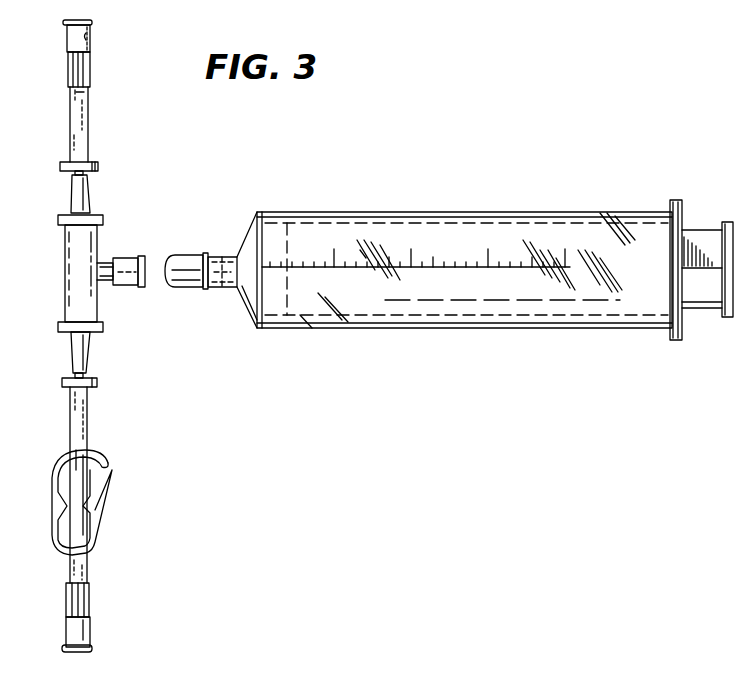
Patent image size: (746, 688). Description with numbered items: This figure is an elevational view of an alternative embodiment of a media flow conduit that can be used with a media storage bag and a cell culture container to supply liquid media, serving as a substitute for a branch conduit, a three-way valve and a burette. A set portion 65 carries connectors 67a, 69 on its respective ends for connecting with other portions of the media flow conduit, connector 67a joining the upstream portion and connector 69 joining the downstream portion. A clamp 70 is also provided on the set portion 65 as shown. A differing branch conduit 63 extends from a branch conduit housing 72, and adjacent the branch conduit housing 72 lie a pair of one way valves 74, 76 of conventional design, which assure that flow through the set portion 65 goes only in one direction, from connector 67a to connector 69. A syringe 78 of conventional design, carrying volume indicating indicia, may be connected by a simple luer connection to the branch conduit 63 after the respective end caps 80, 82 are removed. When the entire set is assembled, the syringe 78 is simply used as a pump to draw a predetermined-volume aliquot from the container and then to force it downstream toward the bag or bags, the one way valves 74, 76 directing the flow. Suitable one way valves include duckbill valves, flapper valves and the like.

The branch conduit 63 is at (107, 267).
The set portion 65 is at (70, 122).
The connector 67a is at (87, 38).
The connector 69 is at (78, 628).
The clamp 70 is at (103, 500).
The branch conduit housing 72 is at (65, 270).
The one way valve 74 is at (100, 166).
The one way valve 76 is at (98, 383).
The syringe 78 is at (473, 240).
The end cap 80 is at (130, 286).
The end cap 82 is at (181, 258).